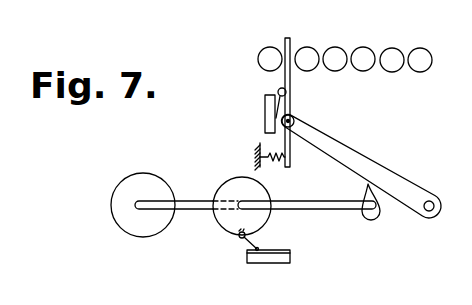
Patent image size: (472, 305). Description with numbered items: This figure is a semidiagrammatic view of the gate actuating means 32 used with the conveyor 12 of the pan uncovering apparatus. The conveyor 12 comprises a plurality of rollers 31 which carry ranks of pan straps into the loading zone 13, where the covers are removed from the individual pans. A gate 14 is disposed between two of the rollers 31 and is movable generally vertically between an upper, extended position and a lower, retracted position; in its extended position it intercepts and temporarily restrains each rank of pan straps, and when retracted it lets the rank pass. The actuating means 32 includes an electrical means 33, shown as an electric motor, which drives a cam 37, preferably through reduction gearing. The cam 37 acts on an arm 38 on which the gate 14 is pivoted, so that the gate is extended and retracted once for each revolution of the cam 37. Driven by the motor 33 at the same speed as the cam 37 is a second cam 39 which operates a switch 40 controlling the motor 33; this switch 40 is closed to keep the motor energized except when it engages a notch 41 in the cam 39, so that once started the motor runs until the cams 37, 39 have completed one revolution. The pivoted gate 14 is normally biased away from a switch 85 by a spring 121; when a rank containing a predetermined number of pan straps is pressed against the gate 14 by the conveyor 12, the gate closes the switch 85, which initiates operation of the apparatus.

The conveyor 12 is at (371, 42).
The loading zone 13 is at (346, 32).
The gate 14 is at (291, 42).
The rollers 31 is at (263, 68).
The actuating means 32 is at (343, 136).
The electrical means 33 is at (137, 237).
The cam 37 is at (380, 218).
The arm 38 is at (373, 167).
The cam 39 is at (232, 233).
The switch 40 is at (267, 265).
The notch 41 is at (246, 234).
The switch 85 is at (263, 127).
The spring 121 is at (277, 163).